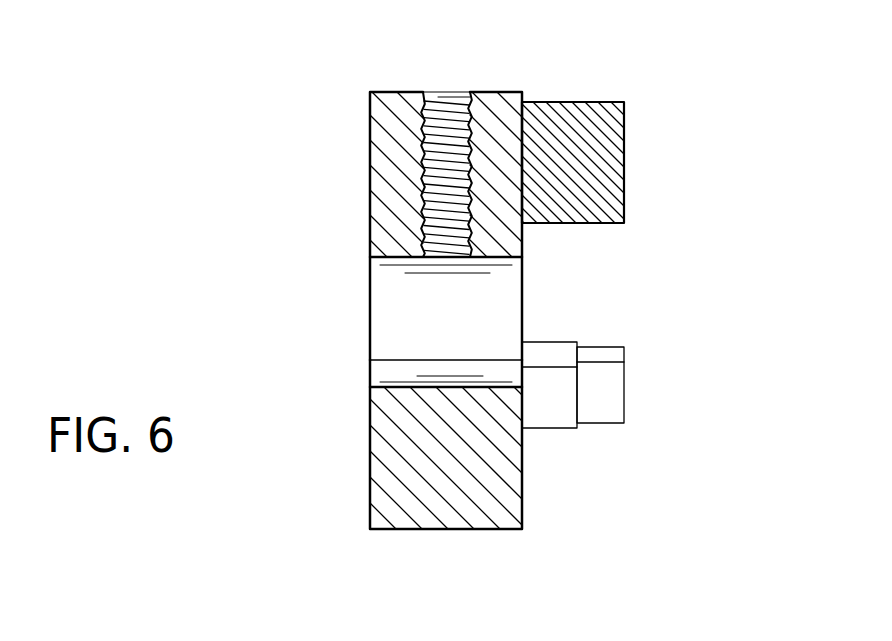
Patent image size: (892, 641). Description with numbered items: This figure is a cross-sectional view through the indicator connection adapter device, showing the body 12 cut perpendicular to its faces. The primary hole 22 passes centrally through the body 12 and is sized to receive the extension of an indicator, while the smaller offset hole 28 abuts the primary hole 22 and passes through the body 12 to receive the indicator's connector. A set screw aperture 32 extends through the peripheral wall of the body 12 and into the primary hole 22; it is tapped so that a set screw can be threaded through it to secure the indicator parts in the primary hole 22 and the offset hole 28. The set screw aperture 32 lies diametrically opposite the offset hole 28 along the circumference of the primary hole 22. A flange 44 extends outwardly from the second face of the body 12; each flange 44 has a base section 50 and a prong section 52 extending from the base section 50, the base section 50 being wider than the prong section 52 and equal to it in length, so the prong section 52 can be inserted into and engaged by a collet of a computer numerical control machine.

The body 12 is at (385, 452).
The primary hole 22 is at (402, 315).
The offset hole 28 is at (385, 376).
The set screw aperture 32 is at (437, 128).
The flange 44 is at (607, 165).
The base section 50 is at (552, 413).
The prong section 52 is at (603, 392).